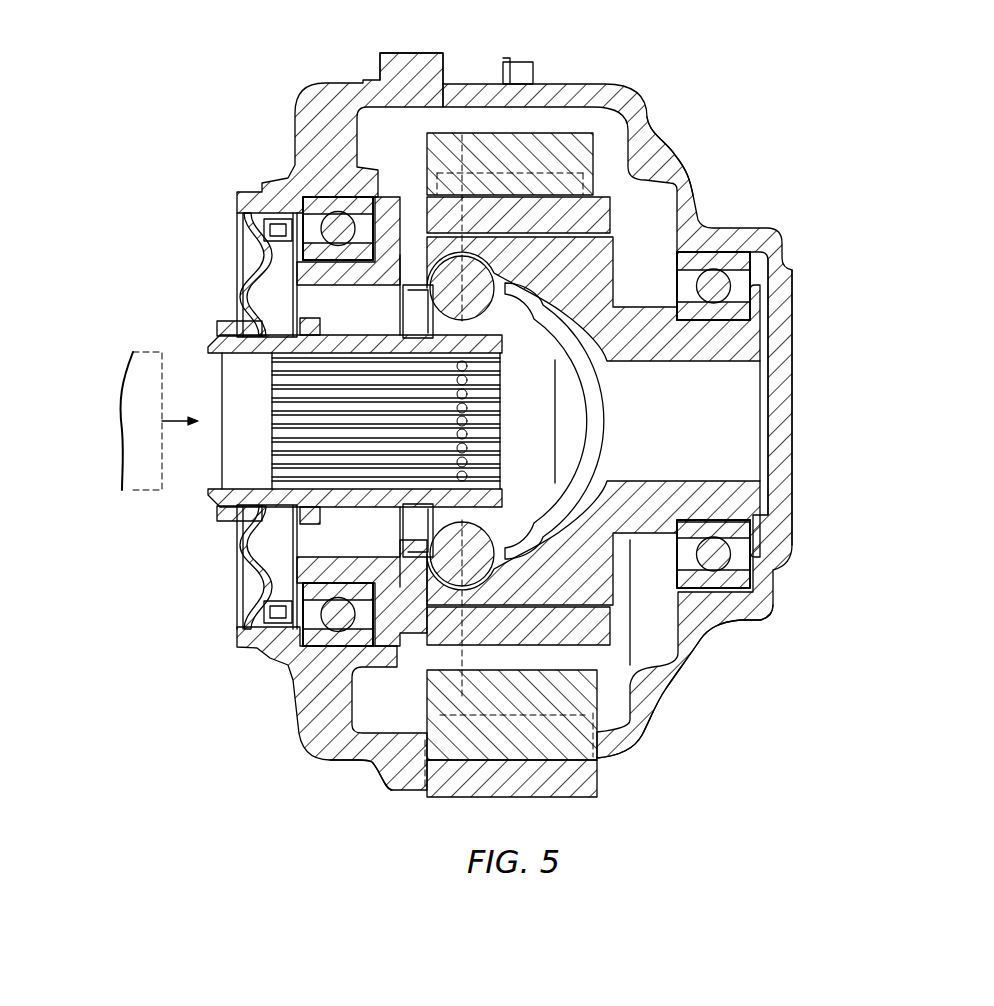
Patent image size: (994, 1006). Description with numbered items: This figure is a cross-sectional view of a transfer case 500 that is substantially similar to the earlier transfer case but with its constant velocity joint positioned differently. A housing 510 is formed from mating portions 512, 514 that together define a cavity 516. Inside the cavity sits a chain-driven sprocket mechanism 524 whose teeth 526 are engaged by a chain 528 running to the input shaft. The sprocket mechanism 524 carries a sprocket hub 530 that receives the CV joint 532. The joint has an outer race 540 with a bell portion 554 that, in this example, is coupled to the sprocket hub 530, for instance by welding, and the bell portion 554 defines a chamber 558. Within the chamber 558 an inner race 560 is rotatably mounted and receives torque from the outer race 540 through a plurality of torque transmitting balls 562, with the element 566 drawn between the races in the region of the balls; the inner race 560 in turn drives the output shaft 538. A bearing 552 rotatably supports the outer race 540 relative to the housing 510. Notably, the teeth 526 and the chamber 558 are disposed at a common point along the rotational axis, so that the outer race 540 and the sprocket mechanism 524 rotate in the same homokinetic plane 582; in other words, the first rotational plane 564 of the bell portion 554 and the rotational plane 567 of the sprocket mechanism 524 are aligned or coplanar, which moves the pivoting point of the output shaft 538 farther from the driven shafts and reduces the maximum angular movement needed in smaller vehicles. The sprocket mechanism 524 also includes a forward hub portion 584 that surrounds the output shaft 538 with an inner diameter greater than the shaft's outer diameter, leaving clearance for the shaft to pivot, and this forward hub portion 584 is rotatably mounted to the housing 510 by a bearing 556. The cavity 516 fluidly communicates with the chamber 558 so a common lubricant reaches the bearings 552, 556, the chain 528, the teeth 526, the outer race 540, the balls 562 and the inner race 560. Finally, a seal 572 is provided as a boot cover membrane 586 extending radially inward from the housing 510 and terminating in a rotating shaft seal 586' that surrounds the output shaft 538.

The transfer case 500 is at (258, 140).
The housing 510 is at (321, 84).
The mating portion 512 is at (381, 56).
The mating portion 514 is at (577, 84).
The cavity 516 is at (392, 128).
The sprocket mechanism 524 is at (305, 742).
The teeth 526 is at (367, 757).
The chain 528 is at (403, 782).
The sprocket hub 530 is at (650, 133).
The constant velocity joint 532 is at (218, 251).
The output shaft 538 is at (147, 492).
The outer race 540 is at (697, 184).
The bearing 552 is at (727, 250).
The bell portion 554 is at (612, 640).
The bearing 556 is at (318, 648).
The chamber 558 is at (562, 340).
The inner race 560 is at (318, 322).
The torque transmitting balls 562 is at (481, 560).
The first rotational plane 564 is at (607, 197).
The cage 566 is at (520, 365).
The rotational plane 567 is at (468, 185).
The seal 572 is at (229, 568).
The homokinetic plane 582 is at (395, 287).
The forward hub portion 584 is at (280, 665).
The boot cover membrane 586 is at (228, 567).
The rotating shaft seal 586' is at (206, 533).